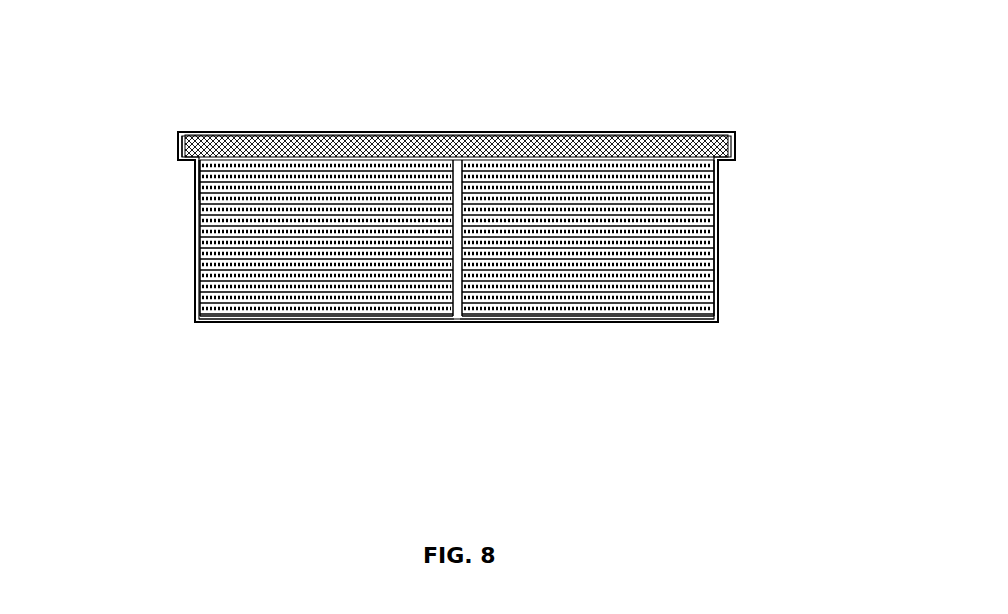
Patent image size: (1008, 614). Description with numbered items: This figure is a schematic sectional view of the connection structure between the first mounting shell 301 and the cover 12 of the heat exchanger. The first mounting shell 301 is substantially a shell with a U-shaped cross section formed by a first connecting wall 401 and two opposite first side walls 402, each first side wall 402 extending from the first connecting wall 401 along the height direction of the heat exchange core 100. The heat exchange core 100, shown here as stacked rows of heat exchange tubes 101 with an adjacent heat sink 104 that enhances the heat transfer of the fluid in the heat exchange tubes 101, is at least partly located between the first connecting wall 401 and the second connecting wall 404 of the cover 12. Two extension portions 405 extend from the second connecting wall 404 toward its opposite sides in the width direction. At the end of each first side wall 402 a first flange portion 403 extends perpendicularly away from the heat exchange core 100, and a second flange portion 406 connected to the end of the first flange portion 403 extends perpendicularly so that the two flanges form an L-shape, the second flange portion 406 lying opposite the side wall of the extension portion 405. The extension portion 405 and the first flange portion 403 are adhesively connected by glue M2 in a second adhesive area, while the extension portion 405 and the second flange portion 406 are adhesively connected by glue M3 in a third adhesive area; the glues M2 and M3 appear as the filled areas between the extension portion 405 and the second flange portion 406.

The cover 12 is at (488, 128).
The second connecting wall 404 is at (330, 133).
The heat sink 104 is at (600, 158).
The extension portion 405 is at (196, 132).
The second flange portion 406 is at (180, 158).
The first flange portion 403 is at (193, 162).
The glue M3 is at (186, 134).
The glue M2 is at (195, 178).
The first side wall 402 is at (197, 258).
The first connecting wall 401 is at (343, 318).
The first mounting shell 301 is at (270, 333).
The heat exchange core 100 is at (601, 302).
The heat exchange tube 101 is at (507, 318).